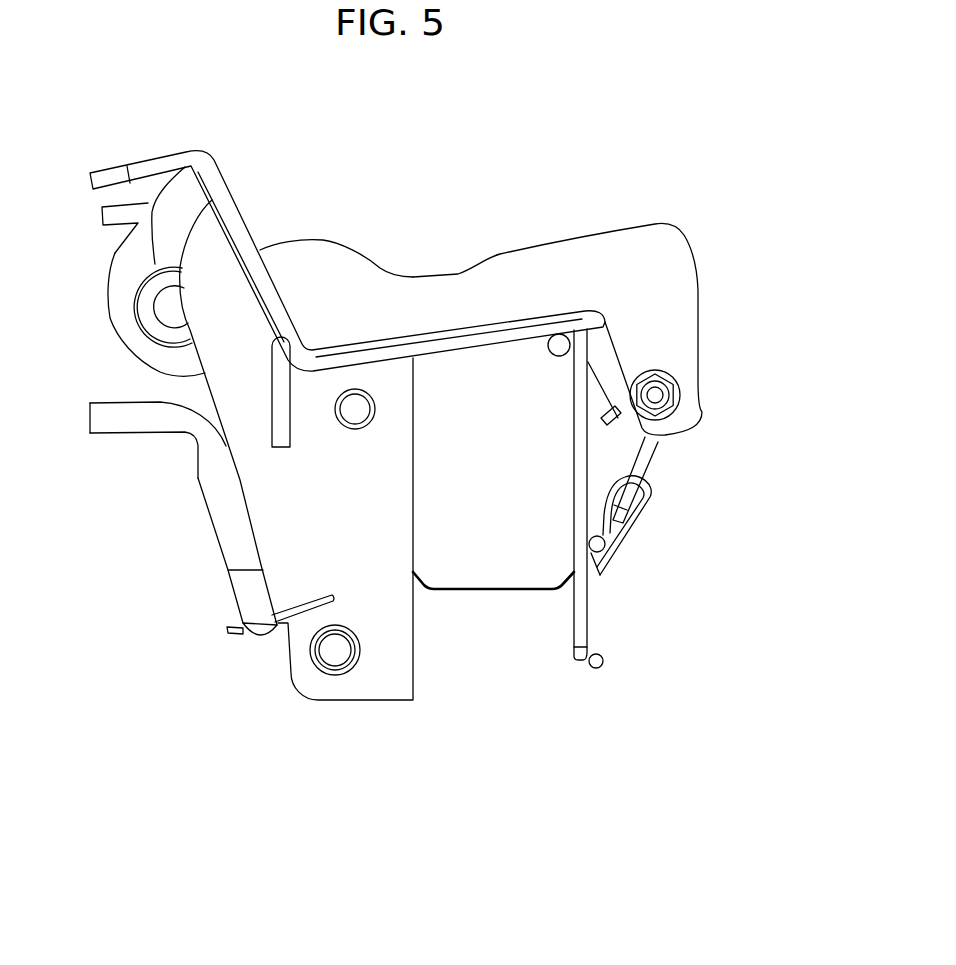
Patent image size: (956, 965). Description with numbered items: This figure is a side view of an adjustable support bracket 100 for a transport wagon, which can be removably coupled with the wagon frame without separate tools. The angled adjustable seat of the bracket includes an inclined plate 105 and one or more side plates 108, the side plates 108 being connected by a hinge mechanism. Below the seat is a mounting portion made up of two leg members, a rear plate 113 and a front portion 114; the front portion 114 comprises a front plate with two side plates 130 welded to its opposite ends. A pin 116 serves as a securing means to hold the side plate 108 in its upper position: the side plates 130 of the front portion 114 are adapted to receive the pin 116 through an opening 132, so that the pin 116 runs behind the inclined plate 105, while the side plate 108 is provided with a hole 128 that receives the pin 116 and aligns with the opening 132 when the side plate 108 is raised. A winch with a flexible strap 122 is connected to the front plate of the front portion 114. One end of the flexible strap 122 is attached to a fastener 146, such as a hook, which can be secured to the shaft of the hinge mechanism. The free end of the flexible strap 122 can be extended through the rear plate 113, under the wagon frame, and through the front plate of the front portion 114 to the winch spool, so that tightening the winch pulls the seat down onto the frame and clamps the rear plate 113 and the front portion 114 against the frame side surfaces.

The adjustable support bracket 100 is at (700, 680).
The inclined plate 105 is at (277, 283).
The side plate 108 is at (337, 273).
The rear plate 113 is at (589, 628).
The front portion 114 is at (300, 725).
The pin 116 is at (280, 417).
The flexible strap 122 is at (497, 593).
The hole 128 is at (291, 351).
The side plates 130 is at (392, 688).
The opening 132 is at (272, 338).
The fastener 146 is at (653, 457).